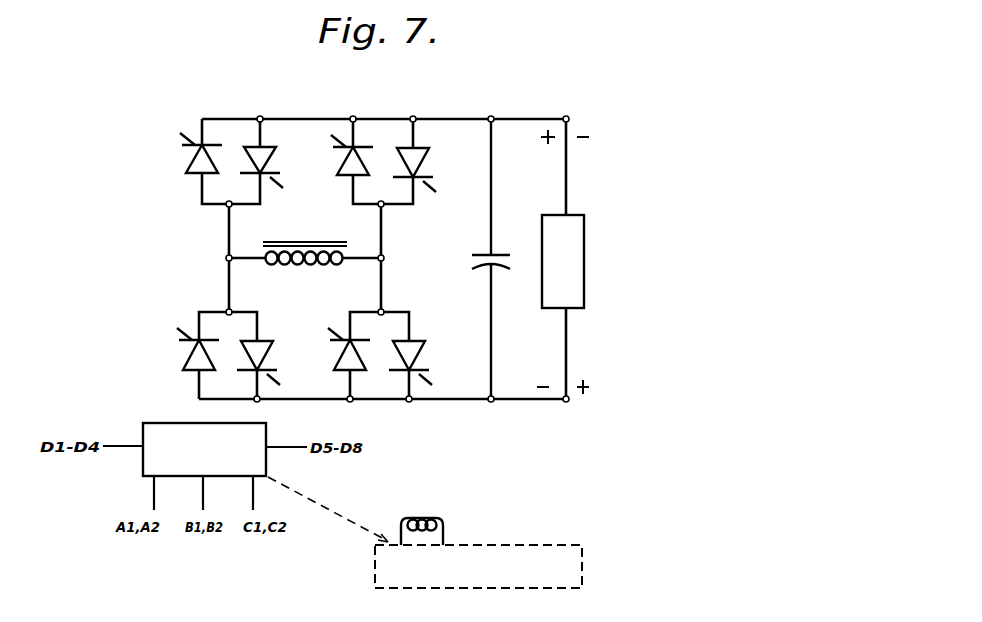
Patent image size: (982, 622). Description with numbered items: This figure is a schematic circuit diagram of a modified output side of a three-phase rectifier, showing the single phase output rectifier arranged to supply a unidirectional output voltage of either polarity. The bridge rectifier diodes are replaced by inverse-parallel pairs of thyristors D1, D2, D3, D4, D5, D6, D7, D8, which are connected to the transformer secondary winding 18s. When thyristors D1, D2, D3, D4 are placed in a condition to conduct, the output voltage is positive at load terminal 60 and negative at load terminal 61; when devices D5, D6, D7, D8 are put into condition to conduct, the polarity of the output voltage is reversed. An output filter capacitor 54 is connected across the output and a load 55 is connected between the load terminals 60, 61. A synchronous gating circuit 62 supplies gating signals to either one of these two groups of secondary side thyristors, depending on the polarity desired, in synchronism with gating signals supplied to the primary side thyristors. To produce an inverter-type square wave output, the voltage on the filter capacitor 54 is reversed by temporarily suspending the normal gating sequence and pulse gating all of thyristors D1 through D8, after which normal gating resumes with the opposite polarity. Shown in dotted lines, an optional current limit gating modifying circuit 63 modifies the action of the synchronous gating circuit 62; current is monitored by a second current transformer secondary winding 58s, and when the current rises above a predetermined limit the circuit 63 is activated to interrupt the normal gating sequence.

The thyristor D1 is at (190, 160).
The thyristor D2 is at (342, 353).
The thyristor D3 is at (344, 163).
The thyristor D4 is at (186, 353).
The thyristor D5 is at (272, 156).
The thyristor D6 is at (419, 352).
The thyristor D7 is at (428, 160).
The thyristor D8 is at (267, 352).
The transformer secondary winding 18s is at (305, 266).
The output filter capacitor 54 is at (501, 254).
The load 55 is at (584, 233).
The second current transformer secondary winding 58s is at (426, 512).
The load terminal 60 is at (569, 117).
The load terminal 61 is at (569, 402).
The synchronous gating circuit 62 is at (152, 422).
The current limit gating modifying circuit 63 is at (553, 543).